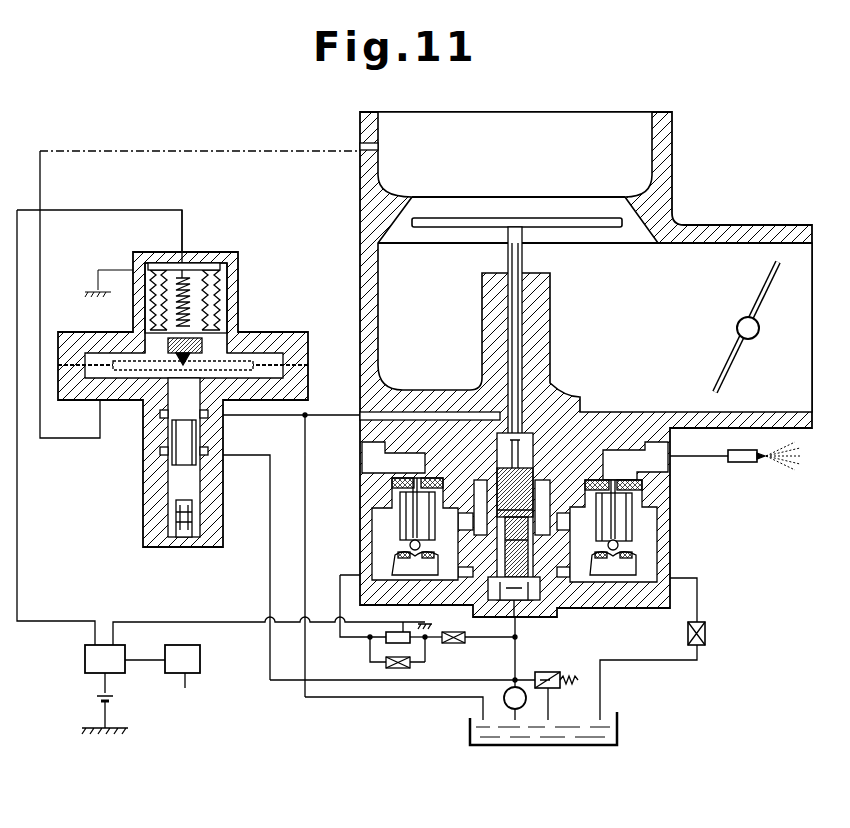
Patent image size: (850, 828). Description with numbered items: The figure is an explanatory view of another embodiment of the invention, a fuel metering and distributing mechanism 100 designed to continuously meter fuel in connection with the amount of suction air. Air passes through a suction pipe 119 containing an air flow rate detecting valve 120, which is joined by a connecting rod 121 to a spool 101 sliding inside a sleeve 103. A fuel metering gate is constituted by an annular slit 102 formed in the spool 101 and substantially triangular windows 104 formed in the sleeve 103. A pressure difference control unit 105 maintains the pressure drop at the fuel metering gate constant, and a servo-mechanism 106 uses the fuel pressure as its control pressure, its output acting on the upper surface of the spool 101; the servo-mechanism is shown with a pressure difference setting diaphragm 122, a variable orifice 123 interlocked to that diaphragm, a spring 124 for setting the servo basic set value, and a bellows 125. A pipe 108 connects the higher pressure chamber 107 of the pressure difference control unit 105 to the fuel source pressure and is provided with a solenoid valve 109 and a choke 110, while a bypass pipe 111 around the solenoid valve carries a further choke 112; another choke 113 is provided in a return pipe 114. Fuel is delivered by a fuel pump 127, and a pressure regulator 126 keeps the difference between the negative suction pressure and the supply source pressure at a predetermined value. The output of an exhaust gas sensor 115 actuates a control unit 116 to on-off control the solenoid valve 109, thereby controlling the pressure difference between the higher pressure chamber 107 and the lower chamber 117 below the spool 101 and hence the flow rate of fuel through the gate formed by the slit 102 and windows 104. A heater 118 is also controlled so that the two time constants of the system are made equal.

The fuel metering and distributing mechanism 100 is at (730, 540).
The spool 101 is at (553, 610).
The annular slit 102 is at (530, 505).
The sleeve 103 is at (548, 470).
The triangular windows 104 is at (600, 462).
The pressure difference control unit 105 is at (675, 504).
The servo-mechanism 106 is at (243, 250).
The higher pressure chamber 107 is at (385, 562).
The pipe 108 is at (342, 638).
The solenoid valve 109 is at (386, 640).
The choke 110 is at (467, 643).
The bypass pipe 111 is at (428, 664).
The choke 112 is at (400, 668).
The choke 113 is at (710, 633).
The return pipe 114 is at (603, 688).
The exhaust gas sensor 115 is at (165, 676).
The control unit 116 is at (82, 672).
The lower chamber 117 is at (540, 600).
The heater 118 is at (196, 302).
The suction pipe 119 is at (672, 150).
The air flow rate detecting valve 120 is at (548, 218).
The connecting rod 121 is at (522, 300).
The pressure difference setting diaphragm 122 is at (290, 332).
The variable orifice 123 is at (223, 445).
The spring 124 is at (150, 285).
The bellows 125 is at (150, 312).
The pressure regulator 126 is at (548, 672).
The fuel pump 127 is at (505, 705).